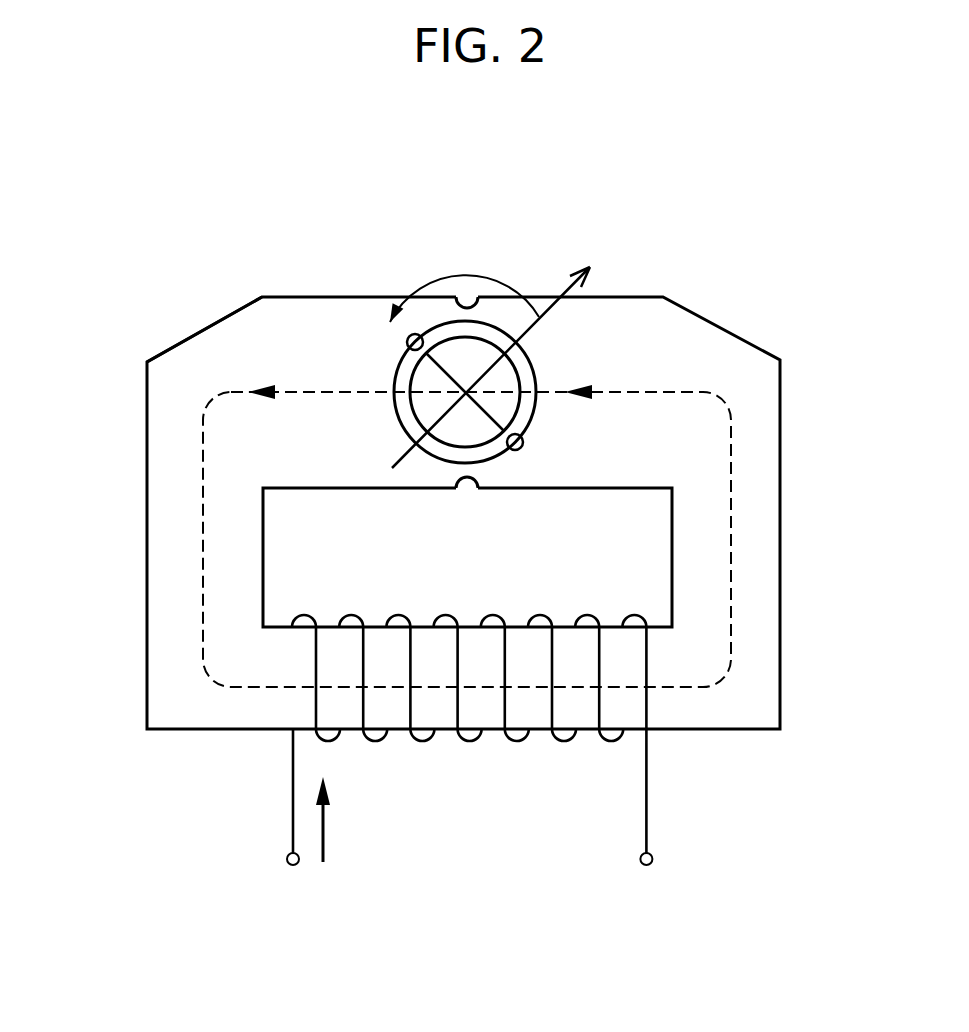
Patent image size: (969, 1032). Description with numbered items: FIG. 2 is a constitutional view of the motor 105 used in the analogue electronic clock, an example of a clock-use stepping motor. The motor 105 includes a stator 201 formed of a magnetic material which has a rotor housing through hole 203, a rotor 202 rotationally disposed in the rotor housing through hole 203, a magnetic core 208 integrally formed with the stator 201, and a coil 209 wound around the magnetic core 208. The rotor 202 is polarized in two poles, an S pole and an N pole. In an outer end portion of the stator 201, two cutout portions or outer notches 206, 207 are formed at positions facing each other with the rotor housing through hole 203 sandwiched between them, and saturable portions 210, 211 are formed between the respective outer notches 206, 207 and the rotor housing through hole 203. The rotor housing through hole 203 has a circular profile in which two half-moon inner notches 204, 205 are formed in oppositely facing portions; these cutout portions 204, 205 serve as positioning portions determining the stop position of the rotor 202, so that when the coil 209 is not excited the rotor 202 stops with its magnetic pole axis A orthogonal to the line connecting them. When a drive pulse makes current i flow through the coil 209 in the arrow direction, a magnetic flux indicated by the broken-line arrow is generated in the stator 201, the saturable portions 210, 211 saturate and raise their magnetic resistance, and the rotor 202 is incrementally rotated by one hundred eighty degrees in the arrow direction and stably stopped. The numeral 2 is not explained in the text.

The stepping motor 2 is at (463, 492).
The motor 105 is at (174, 318).
The stator 201 is at (762, 433).
The rotor 202 is at (510, 385).
The rotor housing through hole 203 is at (523, 368).
The cutout portion (inner notch) 204 is at (530, 445).
The cutout portion (inner notch) 205 is at (405, 338).
The cutout portion (outer notch) 206 is at (468, 300).
The cutout portion (outer notch) 207 is at (468, 486).
The magnetic core 208 is at (167, 697).
The coil 209 is at (422, 742).
The saturable portion 210 is at (453, 313).
The saturable portion 211 is at (480, 468).